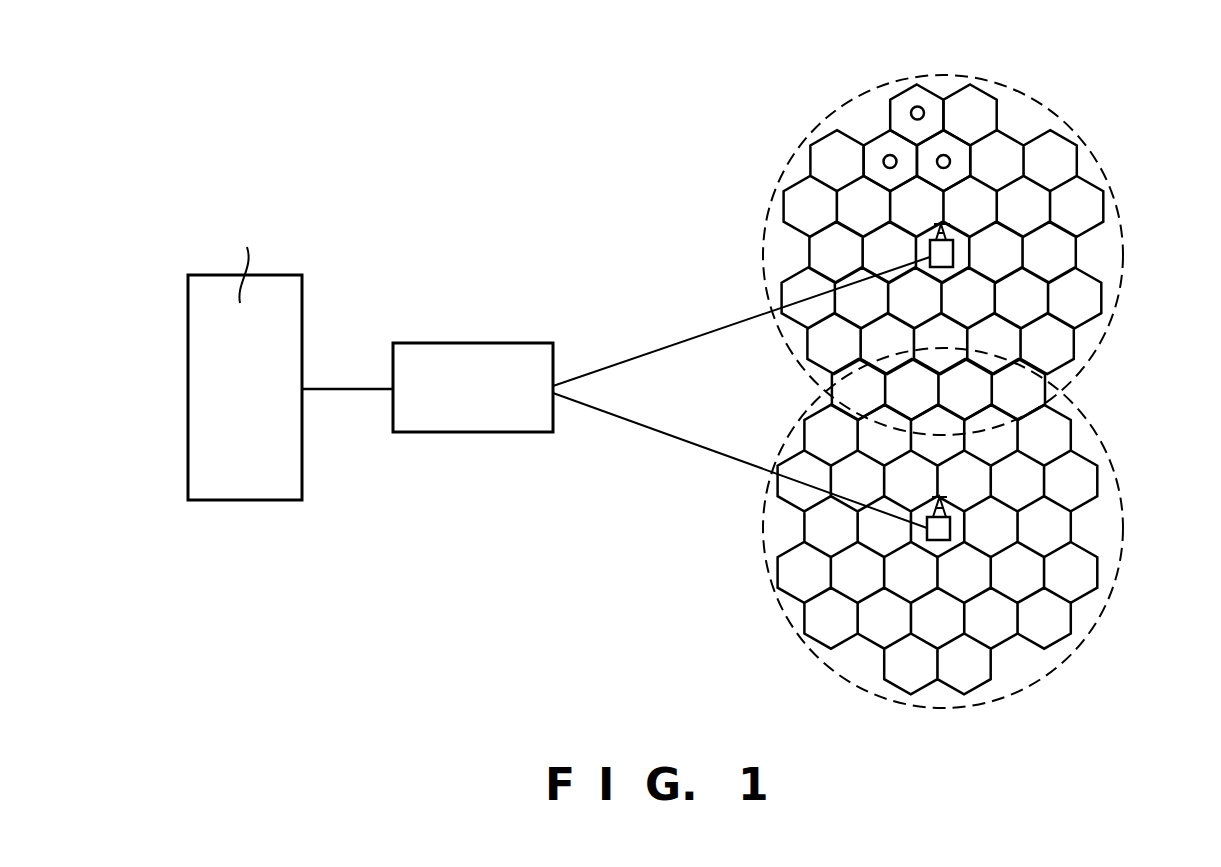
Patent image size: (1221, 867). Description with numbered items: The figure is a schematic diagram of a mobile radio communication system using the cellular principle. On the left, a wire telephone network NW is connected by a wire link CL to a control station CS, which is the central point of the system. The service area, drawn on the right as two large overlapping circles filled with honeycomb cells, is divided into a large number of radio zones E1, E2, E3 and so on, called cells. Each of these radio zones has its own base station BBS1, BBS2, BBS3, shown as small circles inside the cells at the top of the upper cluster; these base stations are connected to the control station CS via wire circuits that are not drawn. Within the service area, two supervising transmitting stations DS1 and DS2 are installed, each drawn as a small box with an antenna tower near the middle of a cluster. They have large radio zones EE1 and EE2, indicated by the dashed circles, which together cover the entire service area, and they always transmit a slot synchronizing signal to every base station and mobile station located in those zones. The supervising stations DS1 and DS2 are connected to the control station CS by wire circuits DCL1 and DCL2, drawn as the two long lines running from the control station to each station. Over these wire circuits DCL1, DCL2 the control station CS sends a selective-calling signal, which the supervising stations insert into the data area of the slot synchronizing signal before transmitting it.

The wire telephone network NW is at (305, 316).
The wire link CL is at (347, 376).
The control station CS is at (523, 343).
The wire circuit DCL1 is at (741, 321).
The wire circuit DCL2 is at (740, 460).
The large radio zone EE1 is at (1120, 210).
The large radio zone EE2 is at (1113, 473).
The radio zone E1 is at (910, 98).
The radio zone E2 is at (873, 162).
The radio zone E3 is at (962, 133).
The base station BBS1 is at (924, 107).
The base station BBS2 is at (886, 156).
The base station BBS3 is at (949, 154).
The supervising transmitting station DS1 is at (957, 240).
The supervising transmitting station DS2 is at (950, 517).